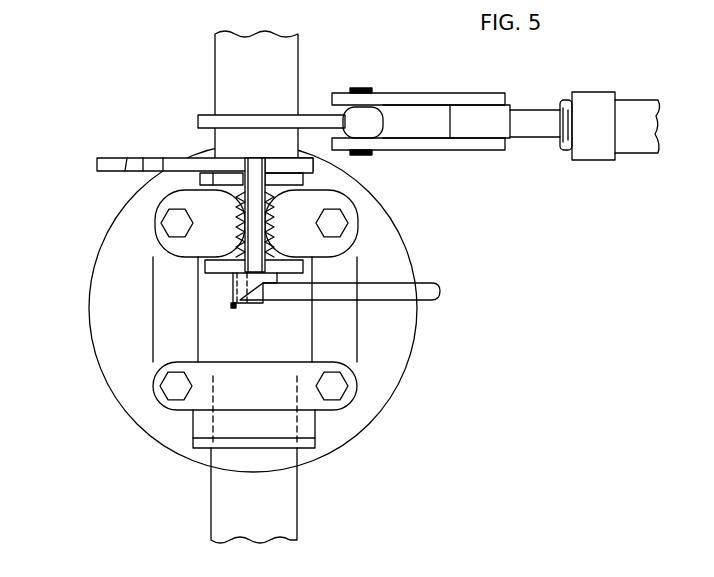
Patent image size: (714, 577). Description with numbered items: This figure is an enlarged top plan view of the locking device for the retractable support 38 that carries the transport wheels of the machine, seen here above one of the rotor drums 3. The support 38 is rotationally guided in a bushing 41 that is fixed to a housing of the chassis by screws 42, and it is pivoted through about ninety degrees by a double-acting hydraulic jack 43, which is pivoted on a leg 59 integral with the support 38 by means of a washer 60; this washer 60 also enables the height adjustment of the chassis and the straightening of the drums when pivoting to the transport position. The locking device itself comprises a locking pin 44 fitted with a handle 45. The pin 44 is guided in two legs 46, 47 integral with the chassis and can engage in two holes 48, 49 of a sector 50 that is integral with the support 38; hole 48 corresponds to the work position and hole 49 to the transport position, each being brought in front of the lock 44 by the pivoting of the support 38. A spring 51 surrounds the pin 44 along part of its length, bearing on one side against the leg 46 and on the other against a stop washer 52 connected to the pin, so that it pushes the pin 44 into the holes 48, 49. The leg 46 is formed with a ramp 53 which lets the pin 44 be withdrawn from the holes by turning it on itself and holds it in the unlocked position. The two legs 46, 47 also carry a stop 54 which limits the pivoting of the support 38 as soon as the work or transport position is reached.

The drum 3 is at (93, 323).
The retractable support 38 is at (223, 490).
The bushing 41 is at (170, 342).
The screws 42 is at (174, 388).
The hydraulic jack 43 is at (595, 152).
The locking pin 44 is at (237, 237).
The handle 45 is at (390, 293).
The leg 46 is at (237, 267).
The leg 47 is at (212, 182).
The hole 48 is at (213, 150).
The hole 49 is at (140, 163).
The sector 50 is at (182, 164).
The spring 51 is at (270, 207).
The stop washer 52 is at (243, 193).
The ramp 53 is at (262, 284).
The stop 54 is at (290, 262).
The leg 59 is at (313, 118).
The washer 60 is at (375, 106).